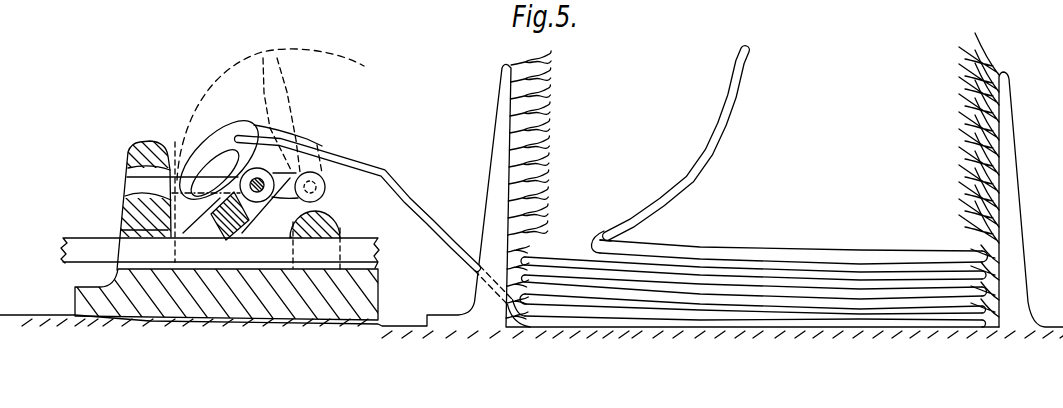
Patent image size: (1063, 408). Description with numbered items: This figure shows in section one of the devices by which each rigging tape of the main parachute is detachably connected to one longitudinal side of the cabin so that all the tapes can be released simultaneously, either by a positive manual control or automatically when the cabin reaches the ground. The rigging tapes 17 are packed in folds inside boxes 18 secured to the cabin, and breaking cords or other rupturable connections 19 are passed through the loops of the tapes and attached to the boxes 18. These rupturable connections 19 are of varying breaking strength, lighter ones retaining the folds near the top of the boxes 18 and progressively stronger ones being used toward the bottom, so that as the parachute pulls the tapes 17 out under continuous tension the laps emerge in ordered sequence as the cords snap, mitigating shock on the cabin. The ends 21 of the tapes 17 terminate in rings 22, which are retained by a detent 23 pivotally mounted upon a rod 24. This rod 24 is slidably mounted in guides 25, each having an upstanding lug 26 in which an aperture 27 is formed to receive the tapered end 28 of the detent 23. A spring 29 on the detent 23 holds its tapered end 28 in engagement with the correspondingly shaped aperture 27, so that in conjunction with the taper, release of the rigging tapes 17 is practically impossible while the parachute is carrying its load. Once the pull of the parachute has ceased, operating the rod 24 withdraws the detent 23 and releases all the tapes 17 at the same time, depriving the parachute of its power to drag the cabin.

The rigging tapes 17 is at (384, 176).
The boxes 18 is at (1010, 167).
The rupturable connections 19 is at (535, 112).
The ends of the tapes 21 is at (252, 120).
The rings 22 is at (197, 150).
The detent 23 is at (193, 187).
The rod 24 is at (90, 250).
The guides 25 is at (107, 307).
The upstanding lug 26 is at (133, 212).
The aperture 27 is at (130, 182).
The tapered end of the detent 28 is at (155, 178).
The spring 29 is at (137, 197).